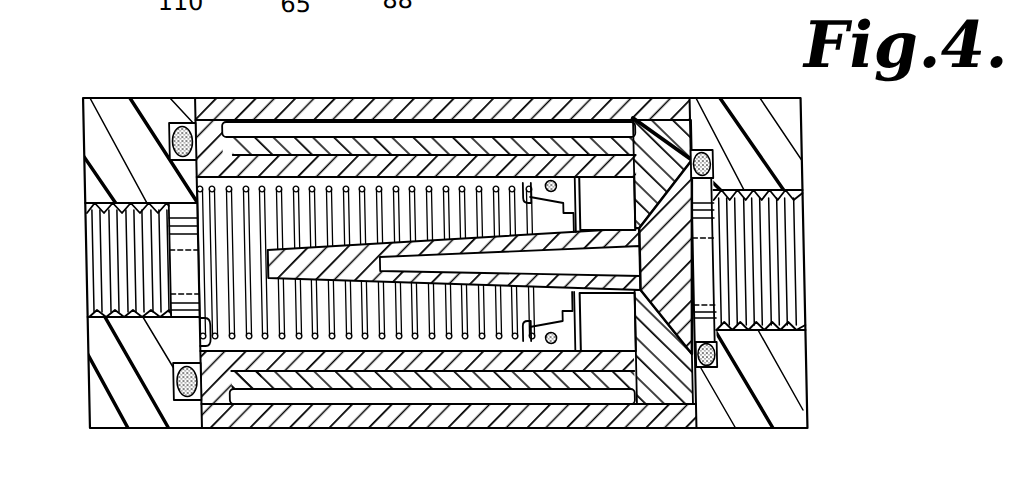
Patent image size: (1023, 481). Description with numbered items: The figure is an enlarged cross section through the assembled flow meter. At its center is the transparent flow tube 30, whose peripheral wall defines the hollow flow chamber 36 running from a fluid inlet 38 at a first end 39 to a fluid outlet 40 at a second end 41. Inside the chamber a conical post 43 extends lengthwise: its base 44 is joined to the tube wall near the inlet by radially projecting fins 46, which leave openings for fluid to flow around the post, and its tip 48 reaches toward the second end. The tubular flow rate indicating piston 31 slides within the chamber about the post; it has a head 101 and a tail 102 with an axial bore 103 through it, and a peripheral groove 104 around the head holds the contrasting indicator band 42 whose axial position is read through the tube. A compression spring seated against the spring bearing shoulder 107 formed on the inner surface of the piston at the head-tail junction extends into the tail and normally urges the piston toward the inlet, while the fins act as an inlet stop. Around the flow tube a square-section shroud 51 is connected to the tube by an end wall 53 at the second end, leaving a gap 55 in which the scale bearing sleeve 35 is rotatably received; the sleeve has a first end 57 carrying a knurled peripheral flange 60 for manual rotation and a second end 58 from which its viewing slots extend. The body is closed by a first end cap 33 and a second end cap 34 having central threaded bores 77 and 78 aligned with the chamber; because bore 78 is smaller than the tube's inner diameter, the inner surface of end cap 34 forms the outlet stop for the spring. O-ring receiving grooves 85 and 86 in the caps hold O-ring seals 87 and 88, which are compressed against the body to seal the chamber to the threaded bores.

The flow tube 30 is at (586, 368).
The flow rate indicating piston 31 is at (465, 100).
The first end cap 33 is at (806, 108).
The second end cap 34 is at (136, 98).
The scale bearing sleeve 35 is at (508, 380).
The flow chamber 36 is at (274, 385).
The fluid inlet 38 is at (693, 317).
The first end 39 is at (672, 147).
The fluid outlet 40 is at (199, 338).
The second end 41 is at (208, 370).
The indicator band 42 is at (504, 245).
The conical post 43 is at (320, 258).
The base 44 is at (642, 233).
The fins 46 is at (652, 190).
The tip 48 is at (268, 250).
The shroud 51 is at (392, 115).
The end wall 53 is at (215, 133).
The gap 55 is at (333, 358).
The first end 57 is at (702, 150).
The second end 58 is at (237, 382).
The knurled peripheral flange 60 is at (654, 407).
The central threaded bore 77 is at (807, 203).
The central threaded bore 78 is at (86, 230).
The O-ring receiving groove 85 is at (710, 365).
The O-ring receiving groove 86 is at (175, 400).
The O-ring seal 87 is at (716, 353).
The O-ring seal 88 is at (172, 397).
The head 101 is at (553, 180).
The tail 102 is at (430, 175).
The axial bore 103 is at (415, 335).
The peripheral groove 104 is at (533, 358).
The spring bearing shoulder 107 is at (500, 185).